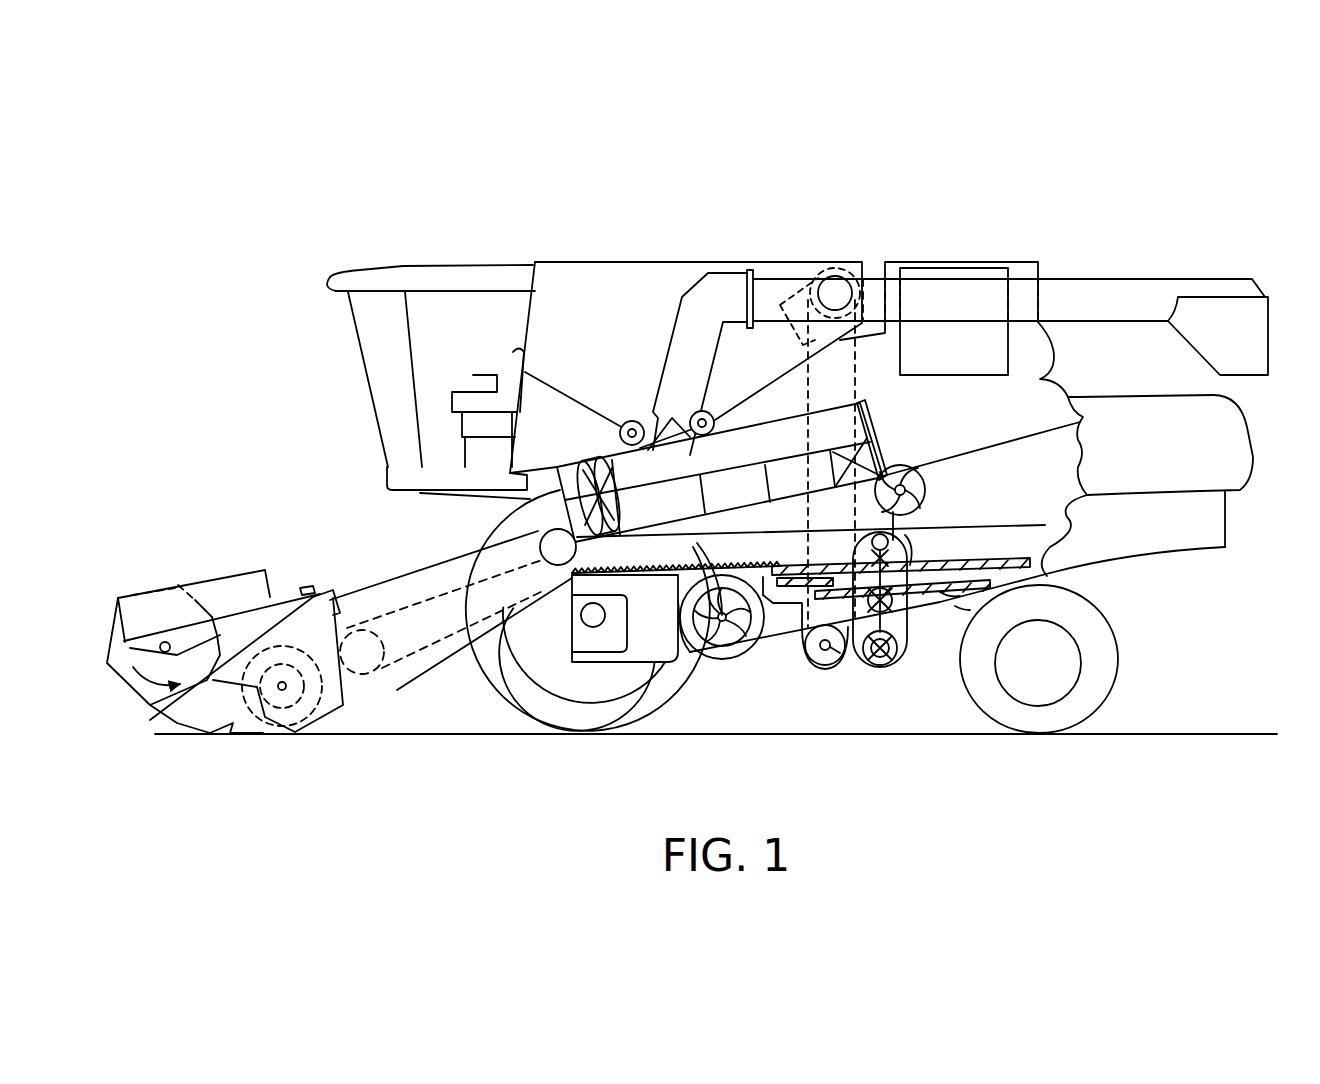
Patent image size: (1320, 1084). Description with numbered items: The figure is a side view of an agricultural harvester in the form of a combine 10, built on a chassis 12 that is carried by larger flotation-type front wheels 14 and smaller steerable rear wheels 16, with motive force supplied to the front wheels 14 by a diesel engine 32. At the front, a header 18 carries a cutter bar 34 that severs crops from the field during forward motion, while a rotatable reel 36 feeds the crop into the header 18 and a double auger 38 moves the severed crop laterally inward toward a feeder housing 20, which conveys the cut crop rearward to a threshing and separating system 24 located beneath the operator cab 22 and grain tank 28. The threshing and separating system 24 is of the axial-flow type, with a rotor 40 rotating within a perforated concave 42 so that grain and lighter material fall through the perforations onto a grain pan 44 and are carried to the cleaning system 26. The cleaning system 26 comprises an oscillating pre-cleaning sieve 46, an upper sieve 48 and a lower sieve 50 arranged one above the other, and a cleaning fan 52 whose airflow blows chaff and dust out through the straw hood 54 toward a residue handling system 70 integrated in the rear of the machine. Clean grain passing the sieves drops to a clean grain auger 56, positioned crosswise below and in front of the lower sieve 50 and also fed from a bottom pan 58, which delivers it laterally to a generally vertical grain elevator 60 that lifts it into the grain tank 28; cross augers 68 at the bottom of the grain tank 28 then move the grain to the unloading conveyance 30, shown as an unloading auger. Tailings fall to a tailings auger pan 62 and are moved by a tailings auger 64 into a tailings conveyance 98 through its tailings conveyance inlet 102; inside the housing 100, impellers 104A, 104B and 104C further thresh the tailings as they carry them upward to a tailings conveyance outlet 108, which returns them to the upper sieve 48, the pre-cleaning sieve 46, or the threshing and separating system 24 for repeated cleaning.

The combine 10 is at (424, 251).
The chassis 12 is at (1058, 572).
The front wheels 14 is at (493, 700).
The rear wheels 16 is at (1110, 675).
The header 18 is at (205, 578).
The feeder housing 20 is at (398, 578).
The operator cab 22 is at (355, 358).
The threshing and separating system 24 is at (512, 510).
The cleaning system 26 is at (785, 680).
The grain tank 28 is at (575, 272).
The unloading conveyance 30 is at (1122, 287).
The diesel engine 32 is at (940, 270).
The cutter bar 34 is at (215, 737).
The rotatable reel 36 is at (115, 640).
The double auger 38 is at (282, 705).
The rotor 40 is at (582, 470).
The perforated concave 42 is at (768, 448).
The grain pan 44 is at (568, 588).
The pre-cleaning sieve 46 is at (813, 565).
The upper sieve 48 is at (955, 565).
The lower sieve 50 is at (933, 594).
The cleaning fan 52 is at (728, 648).
The straw hood 54 is at (1230, 437).
The clean grain auger 56 is at (830, 666).
The bottom pan 58 is at (947, 595).
The grain elevator 60 is at (855, 378).
The tailings auger pan 62 is at (957, 607).
The tailings auger 64 is at (878, 674).
The cross augers 68 is at (628, 420).
The residue handling system 70 is at (1210, 562).
The tailings conveyance 98 is at (910, 565).
The housing 100 is at (907, 530).
The tailings conveyance inlet 102 is at (893, 684).
The impeller 104A is at (868, 668).
The impeller 104B is at (895, 614).
The impeller 104C is at (918, 472).
The tailings conveyance outlet 108 is at (897, 466).